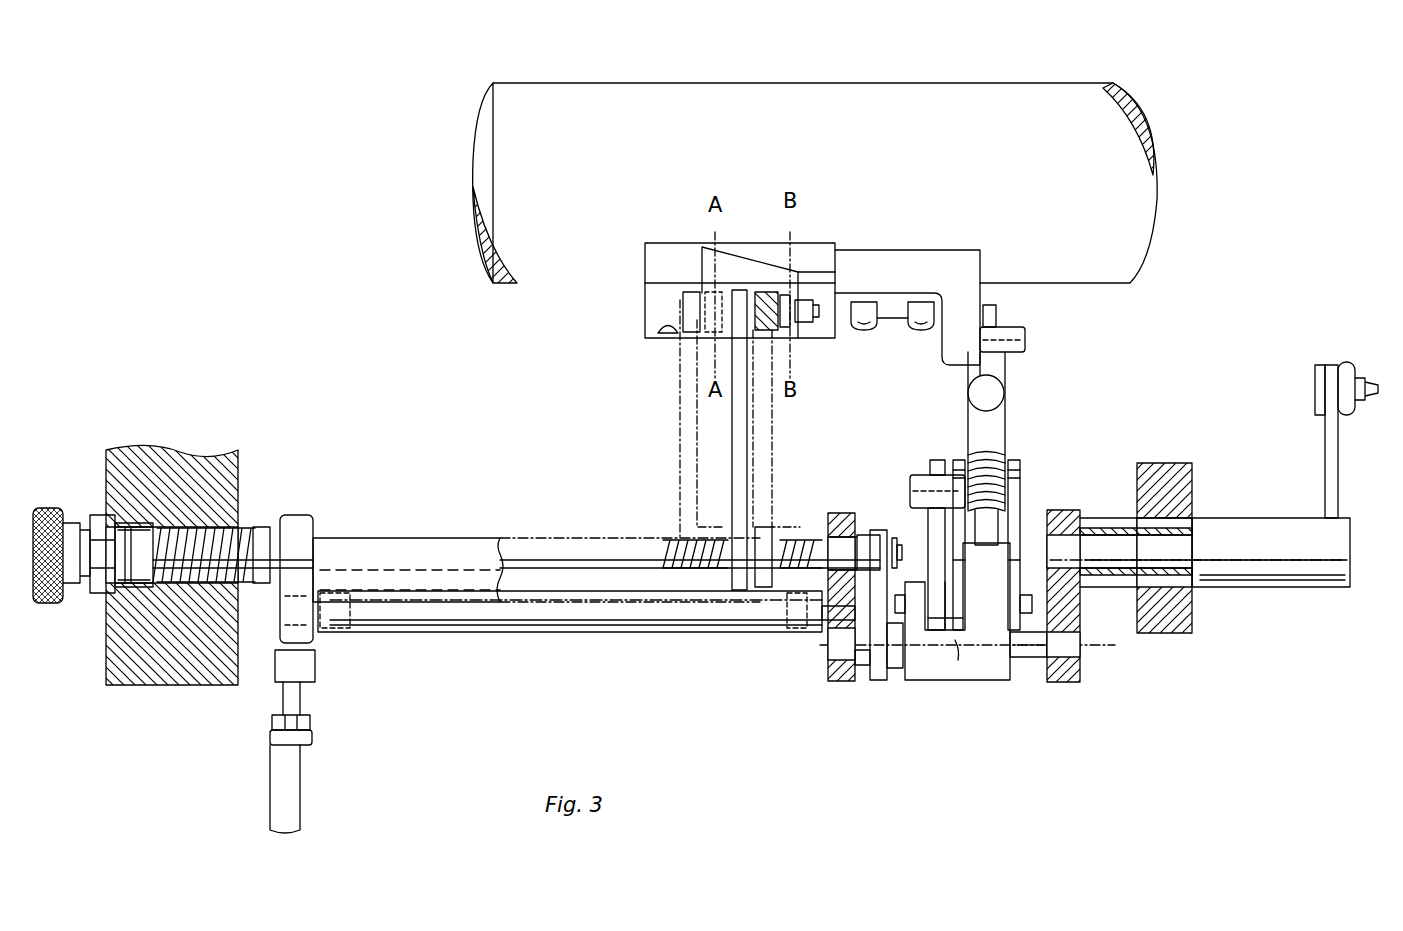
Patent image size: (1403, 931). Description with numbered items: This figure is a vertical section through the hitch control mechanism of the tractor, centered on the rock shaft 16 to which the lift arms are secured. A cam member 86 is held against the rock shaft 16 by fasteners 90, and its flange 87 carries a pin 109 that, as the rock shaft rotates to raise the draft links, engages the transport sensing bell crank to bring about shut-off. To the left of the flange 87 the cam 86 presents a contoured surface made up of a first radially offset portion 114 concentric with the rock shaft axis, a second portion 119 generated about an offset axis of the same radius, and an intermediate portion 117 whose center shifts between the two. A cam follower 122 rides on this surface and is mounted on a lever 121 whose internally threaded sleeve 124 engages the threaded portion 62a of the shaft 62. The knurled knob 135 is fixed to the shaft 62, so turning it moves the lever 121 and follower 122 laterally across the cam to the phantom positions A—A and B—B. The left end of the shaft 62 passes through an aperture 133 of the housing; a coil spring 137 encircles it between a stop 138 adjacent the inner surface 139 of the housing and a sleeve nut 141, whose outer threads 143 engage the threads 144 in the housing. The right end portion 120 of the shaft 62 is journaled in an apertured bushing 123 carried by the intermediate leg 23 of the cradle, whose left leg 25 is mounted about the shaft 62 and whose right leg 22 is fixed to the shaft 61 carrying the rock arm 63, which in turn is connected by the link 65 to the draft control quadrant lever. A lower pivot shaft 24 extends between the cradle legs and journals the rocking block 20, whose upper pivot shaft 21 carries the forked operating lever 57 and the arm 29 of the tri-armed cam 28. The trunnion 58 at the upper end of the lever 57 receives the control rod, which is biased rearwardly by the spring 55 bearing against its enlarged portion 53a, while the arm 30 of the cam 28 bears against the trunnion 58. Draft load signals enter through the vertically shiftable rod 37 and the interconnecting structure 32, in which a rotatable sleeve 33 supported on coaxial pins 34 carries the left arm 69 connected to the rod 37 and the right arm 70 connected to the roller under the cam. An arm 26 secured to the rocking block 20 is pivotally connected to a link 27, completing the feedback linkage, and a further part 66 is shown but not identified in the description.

The rock shaft 16 is at (1123, 231).
The rocking block 20 is at (992, 665).
The upper pivot shaft 21 is at (1032, 605).
The right hand leg 22 is at (1064, 670).
The intermediate leg 23 is at (840, 665).
The lower pivot shaft 24 is at (1048, 645).
The left hand leg 25 is at (278, 550).
The arm 26 is at (897, 668).
The link 27 is at (878, 682).
The tri-armed cam 28 is at (930, 455).
The arm 29 is at (935, 622).
The arm 30 is at (940, 468).
The interconnecting structure 32 is at (637, 634).
The rotatable sleeve member 33 is at (688, 627).
The coaxial pins 34 is at (838, 627).
The vertically shiftable rod 37 is at (287, 782).
The enlarged portion 53a is at (998, 412).
The spring 55 is at (1000, 462).
The forked operating lever 57 is at (1020, 470).
The trunnion 58 is at (920, 488).
The shaft 61 is at (1175, 550).
The shaft 62 is at (318, 545).
The threaded portion 62a is at (790, 545).
The rock arm 63 is at (1330, 432).
The link 65 is at (1350, 372).
The pivot 66 is at (960, 650).
The left hand arm 69 is at (355, 622).
The right hand arm 70 is at (788, 612).
The cam member 86 is at (898, 253).
The flange 87 is at (962, 320).
The fasteners 90 is at (920, 330).
The pin 109 is at (1015, 341).
The first radially offset surface portion 114 is at (822, 287).
The intermediate surface 117 is at (752, 268).
The second radially offset surface portion 119 is at (668, 265).
The right hand end portion 120 is at (838, 545).
The lever 121 is at (742, 462).
The cam follower 122 is at (766, 320).
The apertured bushing 123 is at (862, 550).
The sleeve 124 is at (765, 545).
The aperture 133 is at (215, 527).
The knob 135 is at (47, 515).
The coil spring 137 is at (240, 580).
The stop 138 is at (282, 518).
The inner surface 139 is at (238, 665).
The sleeve nut 141 is at (98, 585).
The threads 143 is at (120, 600).
The threads 144 is at (130, 527).